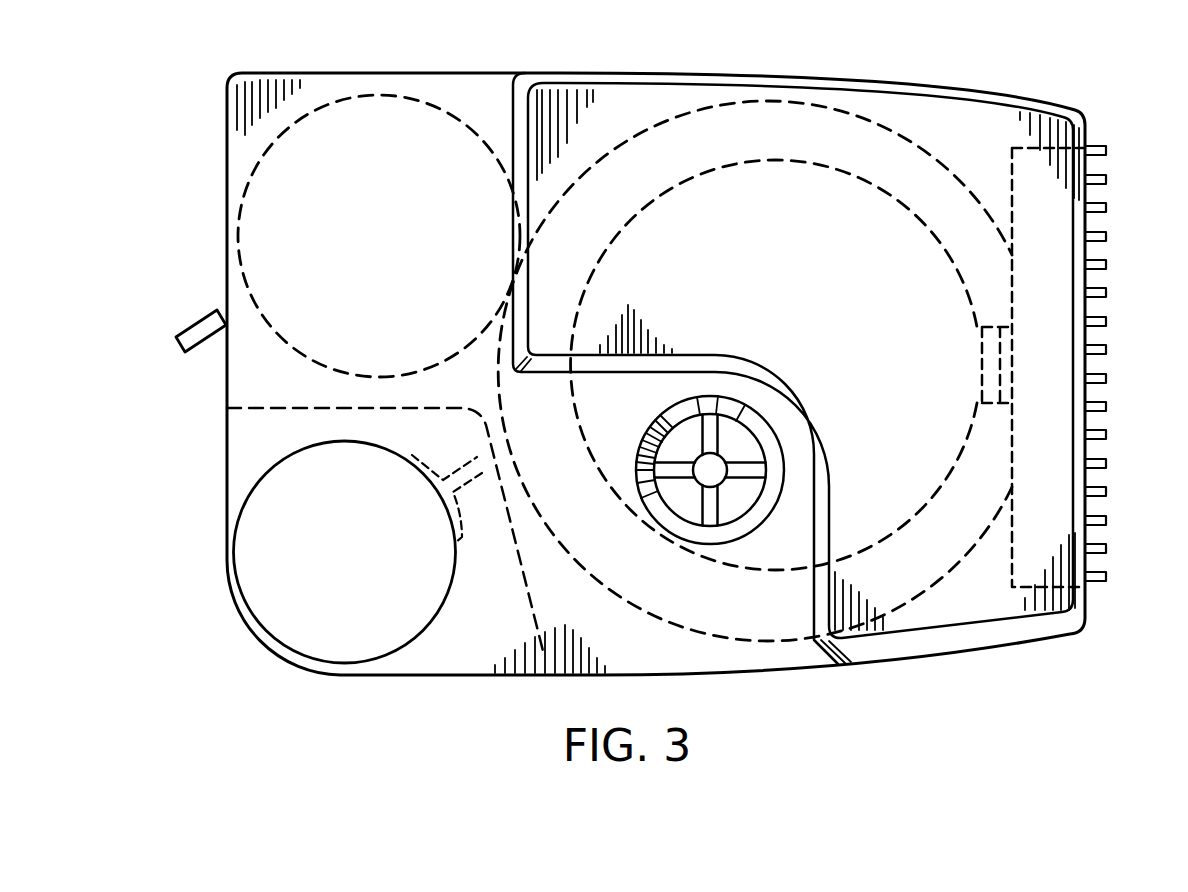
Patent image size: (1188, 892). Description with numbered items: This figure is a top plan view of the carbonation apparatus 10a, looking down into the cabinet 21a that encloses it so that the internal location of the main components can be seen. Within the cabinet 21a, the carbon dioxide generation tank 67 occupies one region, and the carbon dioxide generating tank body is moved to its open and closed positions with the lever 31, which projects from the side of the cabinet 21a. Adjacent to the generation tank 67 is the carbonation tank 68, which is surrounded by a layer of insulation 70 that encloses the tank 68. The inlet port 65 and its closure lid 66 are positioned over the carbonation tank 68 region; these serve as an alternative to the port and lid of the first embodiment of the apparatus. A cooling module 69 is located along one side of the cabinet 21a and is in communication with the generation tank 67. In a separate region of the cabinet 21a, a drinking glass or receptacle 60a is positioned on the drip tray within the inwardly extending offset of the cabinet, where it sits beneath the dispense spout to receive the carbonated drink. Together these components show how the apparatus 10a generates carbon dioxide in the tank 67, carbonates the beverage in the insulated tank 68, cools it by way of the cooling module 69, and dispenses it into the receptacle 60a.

The carbonation apparatus 10a is at (992, 66).
The cabinet 21a is at (883, 103).
The lever 31 is at (195, 325).
The drinking receptacle 60a is at (410, 643).
The inlet port 65 is at (771, 443).
The closure lid 66 is at (740, 495).
The carbon dioxide generation tank 67 is at (440, 108).
The carbonation tank 68 is at (743, 163).
The cooling module 69 is at (1094, 151).
The layer of insulation 70 is at (640, 137).